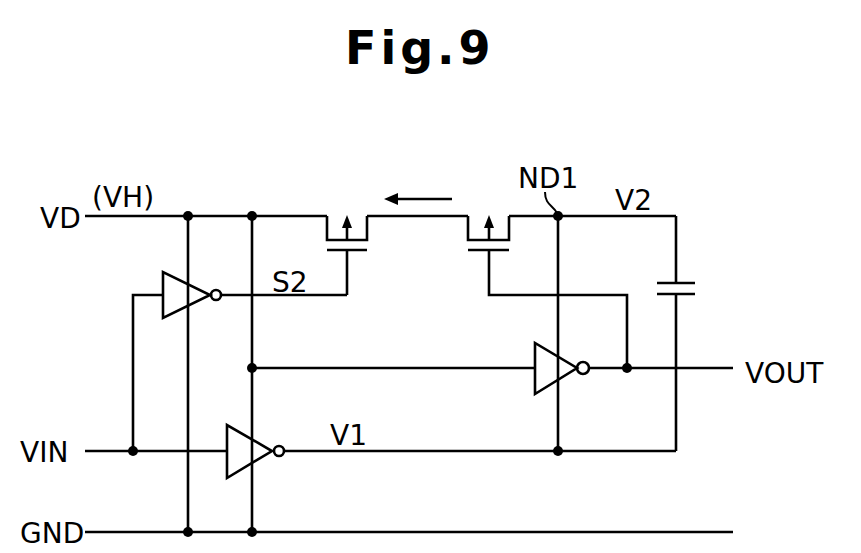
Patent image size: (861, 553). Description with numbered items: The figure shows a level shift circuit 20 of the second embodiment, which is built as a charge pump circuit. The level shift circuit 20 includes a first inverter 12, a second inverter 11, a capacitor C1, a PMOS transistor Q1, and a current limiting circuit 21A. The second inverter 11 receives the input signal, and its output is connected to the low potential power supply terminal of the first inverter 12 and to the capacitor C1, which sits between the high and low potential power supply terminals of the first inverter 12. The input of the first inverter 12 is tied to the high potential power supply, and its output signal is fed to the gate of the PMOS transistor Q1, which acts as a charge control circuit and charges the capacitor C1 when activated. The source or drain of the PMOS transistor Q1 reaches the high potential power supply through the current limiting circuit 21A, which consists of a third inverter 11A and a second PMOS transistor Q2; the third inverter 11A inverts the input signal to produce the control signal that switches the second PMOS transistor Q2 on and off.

The second inverter 11 is at (228, 438).
The third inverter 11A is at (163, 288).
The first inverter 12 is at (535, 356).
The level shift circuit 20 is at (726, 300).
The current limiting circuit 21A is at (453, 248).
The PMOS transistor Q1 is at (480, 254).
The second PMOS transistor Q2 is at (358, 254).
The capacitor C1 is at (706, 201).